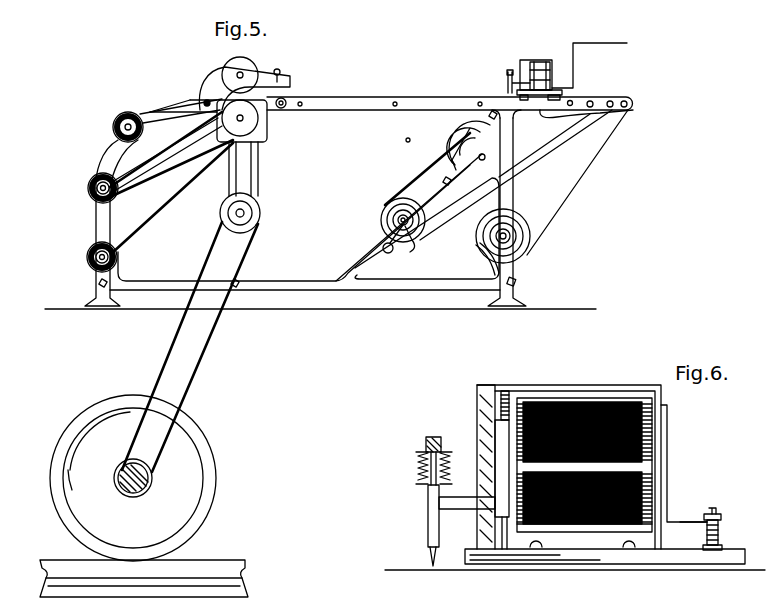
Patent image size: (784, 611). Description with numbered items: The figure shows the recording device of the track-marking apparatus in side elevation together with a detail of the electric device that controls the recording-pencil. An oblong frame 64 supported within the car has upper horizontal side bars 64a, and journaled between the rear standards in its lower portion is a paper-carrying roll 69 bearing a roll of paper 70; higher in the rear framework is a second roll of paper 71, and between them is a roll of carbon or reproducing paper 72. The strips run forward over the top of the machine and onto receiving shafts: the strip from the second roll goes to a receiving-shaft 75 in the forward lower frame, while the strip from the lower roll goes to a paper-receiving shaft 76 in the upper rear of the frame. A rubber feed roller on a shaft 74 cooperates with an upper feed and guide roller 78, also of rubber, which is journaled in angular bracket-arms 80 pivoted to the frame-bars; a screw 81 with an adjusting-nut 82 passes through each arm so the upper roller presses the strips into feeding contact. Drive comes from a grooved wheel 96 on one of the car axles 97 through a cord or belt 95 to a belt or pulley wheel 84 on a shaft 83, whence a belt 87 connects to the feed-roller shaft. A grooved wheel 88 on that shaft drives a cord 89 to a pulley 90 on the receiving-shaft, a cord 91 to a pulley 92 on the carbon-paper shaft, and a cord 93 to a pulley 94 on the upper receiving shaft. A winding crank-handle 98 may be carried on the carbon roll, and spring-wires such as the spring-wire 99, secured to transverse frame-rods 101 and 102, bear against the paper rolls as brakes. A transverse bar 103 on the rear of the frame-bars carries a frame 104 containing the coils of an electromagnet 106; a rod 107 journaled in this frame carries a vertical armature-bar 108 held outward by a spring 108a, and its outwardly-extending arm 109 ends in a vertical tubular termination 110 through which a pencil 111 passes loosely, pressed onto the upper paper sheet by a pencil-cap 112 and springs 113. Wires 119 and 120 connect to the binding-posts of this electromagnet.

In FIG. 5, the oblong frame 64 is at (288, 280).
In FIG. 5, the upper horizontal side bars 64a is at (408, 108).
In FIG. 5, the paper-carrying roll 69 is at (506, 238).
In FIG. 5, the roll of paper 70 is at (597, 153).
In FIG. 6, the roll of paper 70 is at (451, 570).
In FIG. 5, the second roll of paper 71 is at (540, 152).
In FIG. 5, the roll of carbon or reproducing paper 72 is at (398, 203).
In FIG. 5, the shaft 74 is at (246, 121).
In FIG. 5, the receiving-shaft 75 is at (97, 252).
In FIG. 5, the paper-receiving shaft 76 is at (116, 130).
In FIG. 5, the upper feed and guide roller 78 is at (252, 65).
In FIG. 5, the angular bracket-arms 80 is at (224, 83).
In FIG. 5, the screw 81 is at (247, 115).
In FIG. 5, the adjusting-nut 82 is at (280, 71).
In FIG. 5, the shaft 83 is at (247, 214).
In FIG. 5, the belt or pulley wheel 84 is at (258, 207).
In FIG. 5, the belt 87 is at (261, 163).
In FIG. 5, the wheel 88 is at (286, 101).
In FIG. 5, the cord or belt 89 is at (160, 207).
In FIG. 5, the pulley or wheel 90 is at (100, 262).
In FIG. 5, the cord or belt 91 is at (138, 176).
In FIG. 5, the pulley or wheel 92 is at (106, 191).
In FIG. 5, the belt or cord 93 is at (160, 107).
In FIG. 5, the pulley 94 is at (130, 112).
In FIG. 5, the cord or belt 95 is at (222, 322).
In FIG. 5, the grooved wheel 96 is at (150, 482).
In FIG. 5, the axle 97 is at (100, 188).
In FIG. 5, the winding crank-handle 98 is at (397, 232).
In FIG. 5, the spring-wire 99 is at (473, 243).
In FIG. 5, the transverse frame-rod 101 is at (515, 281).
In FIG. 5, the transverse frame-rod 102 is at (452, 157).
In FIG. 5, the transverse bar 103 is at (580, 103).
In FIG. 5, the frame 104 is at (536, 61).
In FIG. 6, the frame 104 is at (608, 383).
In FIG. 5, the electromagnet 106 is at (537, 62).
In FIG. 6, the electromagnet 106 is at (542, 403).
In FIG. 6, the rod 107 is at (505, 403).
In FIG. 6, the armature-bar 108 is at (495, 437).
In FIG. 6, the spring 108a is at (487, 391).
In FIG. 6, the outwardly-extending arm 109 is at (450, 503).
In FIG. 5, the vertical tubular termination 110 is at (507, 82).
In FIG. 6, the vertical tubular termination 110 is at (428, 500).
In FIG. 6, the pencil 111 is at (432, 555).
In FIG. 6, the pencil-cap 112 is at (431, 446).
In FIG. 6, the springs 113 is at (418, 467).
In FIG. 6, the wire 119 is at (693, 520).
In FIG. 6, the wire 120 is at (684, 527).